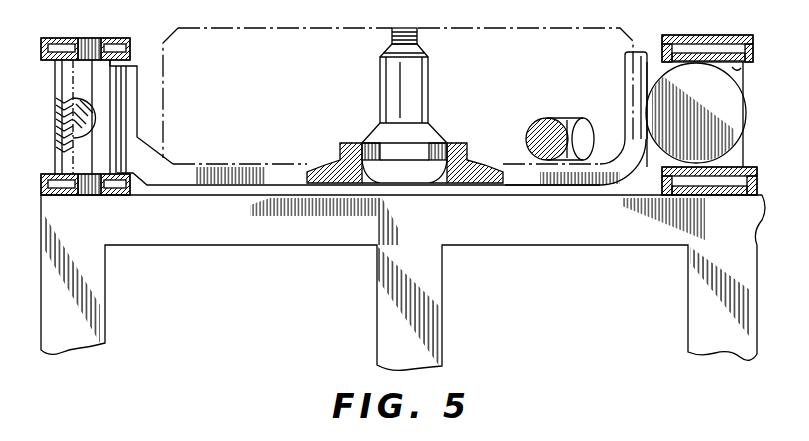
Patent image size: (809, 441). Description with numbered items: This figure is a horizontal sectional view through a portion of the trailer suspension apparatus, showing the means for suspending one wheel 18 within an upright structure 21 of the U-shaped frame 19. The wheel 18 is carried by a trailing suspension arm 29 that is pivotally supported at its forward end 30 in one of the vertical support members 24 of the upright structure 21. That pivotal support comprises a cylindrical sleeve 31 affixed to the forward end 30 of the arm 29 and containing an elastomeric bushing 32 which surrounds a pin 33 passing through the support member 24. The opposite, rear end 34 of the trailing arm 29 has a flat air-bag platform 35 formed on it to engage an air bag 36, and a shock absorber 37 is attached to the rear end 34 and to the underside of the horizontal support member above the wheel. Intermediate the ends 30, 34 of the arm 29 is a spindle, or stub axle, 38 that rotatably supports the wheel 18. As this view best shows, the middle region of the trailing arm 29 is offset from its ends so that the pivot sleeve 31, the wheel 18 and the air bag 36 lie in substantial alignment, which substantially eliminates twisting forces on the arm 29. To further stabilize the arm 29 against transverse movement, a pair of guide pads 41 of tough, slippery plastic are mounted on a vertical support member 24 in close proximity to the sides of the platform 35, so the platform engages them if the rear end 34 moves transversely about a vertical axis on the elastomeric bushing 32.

The wheel 18 is at (566, 27).
The U-shaped frame 19 is at (133, 196).
The upright structure 21 is at (64, 196).
The vertical support member 24 is at (56, 38).
The trailing suspension arm 29 is at (545, 187).
The forward end 30 is at (143, 158).
The cylindrical sleeve 31 is at (57, 81).
The elastomeric bushing 32 is at (87, 108).
The pin 33 is at (97, 38).
The rear end 34 is at (643, 50).
The air-bag platform 35 is at (738, 72).
The air bag 36 is at (750, 121).
The shock absorber 37 is at (582, 104).
The spindle 38 is at (430, 72).
The guide pads 41 is at (753, 62).